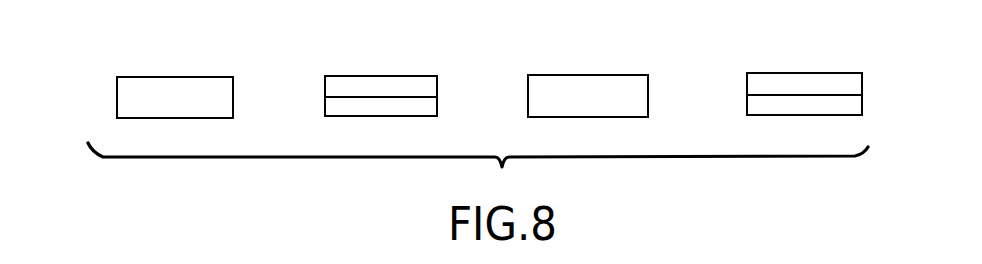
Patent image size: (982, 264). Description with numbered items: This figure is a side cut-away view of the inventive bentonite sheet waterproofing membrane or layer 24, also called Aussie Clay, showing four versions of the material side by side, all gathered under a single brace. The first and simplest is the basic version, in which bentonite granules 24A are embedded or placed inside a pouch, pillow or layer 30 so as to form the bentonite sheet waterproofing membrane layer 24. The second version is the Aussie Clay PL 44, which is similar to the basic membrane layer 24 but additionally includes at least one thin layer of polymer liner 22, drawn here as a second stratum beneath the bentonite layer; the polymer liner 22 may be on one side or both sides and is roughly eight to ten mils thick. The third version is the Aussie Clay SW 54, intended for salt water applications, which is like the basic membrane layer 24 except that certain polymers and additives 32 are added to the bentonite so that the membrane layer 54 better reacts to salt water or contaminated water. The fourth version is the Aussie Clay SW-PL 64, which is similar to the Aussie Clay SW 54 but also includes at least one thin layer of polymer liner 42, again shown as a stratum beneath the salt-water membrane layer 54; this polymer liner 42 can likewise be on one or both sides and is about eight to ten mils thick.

The polymer liner 22 is at (333, 107).
The bentonite sheet waterproofing membrane layer 24 is at (128, 92).
The bentonite granules 24A is at (162, 85).
The pouch 30 is at (210, 77).
The polymers and additives 32 is at (538, 100).
The polymer liner 42 is at (755, 105).
The Aussie Clay PL 44 is at (397, 76).
The Aussie Clay SW 54 is at (613, 75).
The Aussie Clay SW-PL 64 is at (835, 73).